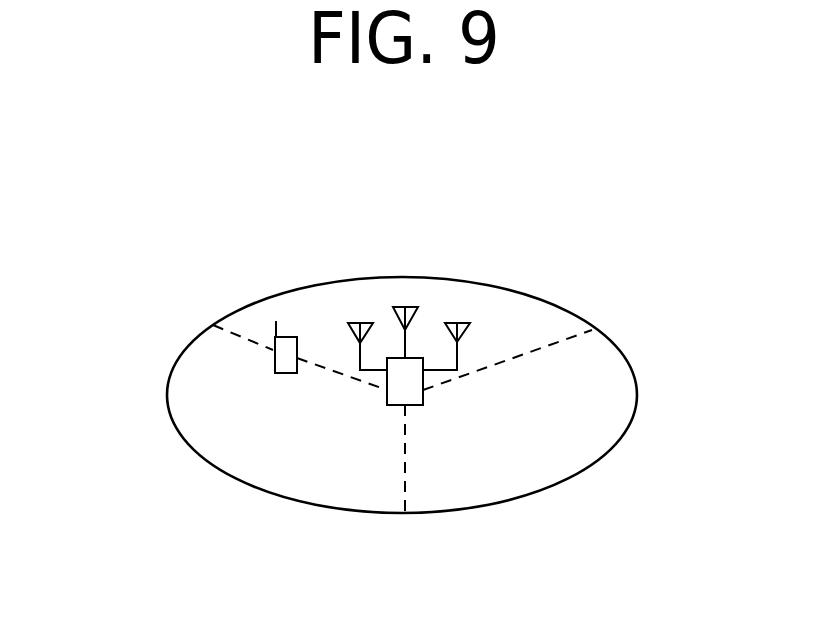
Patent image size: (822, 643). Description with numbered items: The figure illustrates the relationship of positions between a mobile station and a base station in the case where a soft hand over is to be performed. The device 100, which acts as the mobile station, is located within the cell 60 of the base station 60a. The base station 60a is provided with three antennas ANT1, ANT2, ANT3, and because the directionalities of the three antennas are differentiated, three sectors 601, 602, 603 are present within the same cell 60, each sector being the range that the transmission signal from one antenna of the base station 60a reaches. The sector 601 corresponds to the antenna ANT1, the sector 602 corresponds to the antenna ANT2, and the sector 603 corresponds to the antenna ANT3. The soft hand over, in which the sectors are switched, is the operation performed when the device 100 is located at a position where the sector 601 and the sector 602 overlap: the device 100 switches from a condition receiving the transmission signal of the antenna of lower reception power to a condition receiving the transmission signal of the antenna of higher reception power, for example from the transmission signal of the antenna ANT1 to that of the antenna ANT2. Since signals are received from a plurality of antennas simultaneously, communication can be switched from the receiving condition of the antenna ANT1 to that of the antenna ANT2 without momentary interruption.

The cell 60 is at (622, 350).
The base station 60a is at (425, 405).
The sector 601 is at (267, 315).
The sector 602 is at (228, 455).
The sector 603 is at (592, 438).
The device 100 is at (273, 360).
The antenna ANT1 is at (405, 306).
The antenna ANT2 is at (356, 322).
The antenna ANT3 is at (458, 322).